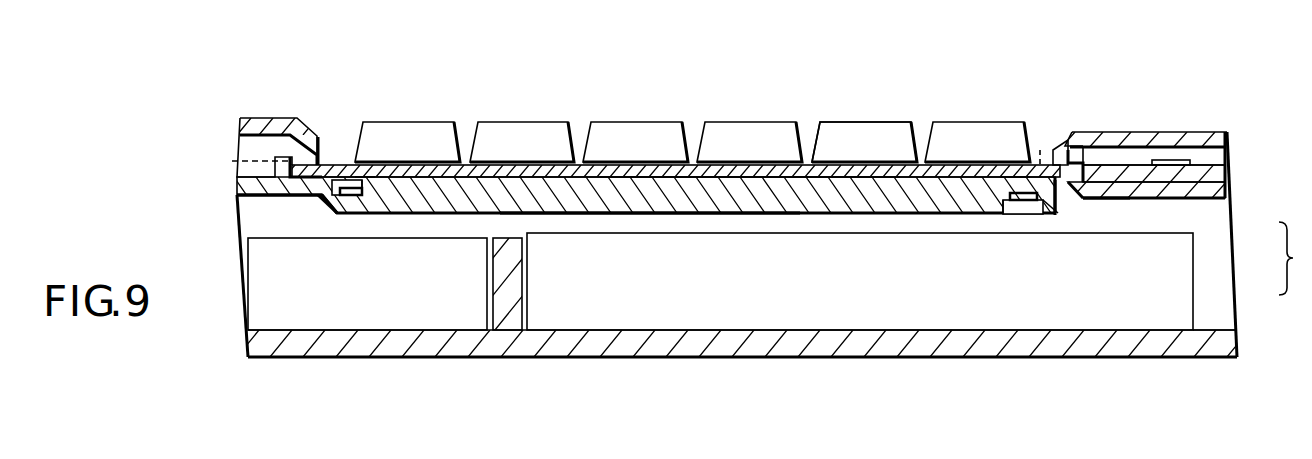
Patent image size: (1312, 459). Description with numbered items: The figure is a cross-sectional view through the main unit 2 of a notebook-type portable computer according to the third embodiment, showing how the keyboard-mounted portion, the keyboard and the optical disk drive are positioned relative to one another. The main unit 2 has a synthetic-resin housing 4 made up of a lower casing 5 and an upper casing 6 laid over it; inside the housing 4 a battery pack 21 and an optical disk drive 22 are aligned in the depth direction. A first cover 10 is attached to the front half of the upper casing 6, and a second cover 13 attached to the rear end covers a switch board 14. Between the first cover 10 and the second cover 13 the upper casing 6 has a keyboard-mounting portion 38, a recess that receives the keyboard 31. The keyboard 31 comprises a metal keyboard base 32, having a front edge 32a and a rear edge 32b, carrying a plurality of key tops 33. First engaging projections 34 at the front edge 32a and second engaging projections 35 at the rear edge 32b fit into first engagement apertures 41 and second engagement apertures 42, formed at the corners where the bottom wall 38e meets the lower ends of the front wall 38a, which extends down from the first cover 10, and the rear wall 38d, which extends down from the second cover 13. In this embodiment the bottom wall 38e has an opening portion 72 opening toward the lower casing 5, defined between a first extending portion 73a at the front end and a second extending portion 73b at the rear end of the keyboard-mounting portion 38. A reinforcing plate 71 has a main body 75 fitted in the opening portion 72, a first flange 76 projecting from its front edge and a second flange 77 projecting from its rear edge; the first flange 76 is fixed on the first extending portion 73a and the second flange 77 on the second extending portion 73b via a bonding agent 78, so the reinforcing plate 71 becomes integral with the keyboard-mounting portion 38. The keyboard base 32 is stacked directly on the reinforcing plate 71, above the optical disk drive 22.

The main unit 2 is at (1065, 366).
The housing 4 is at (1294, 258).
The lower casing 5 is at (1200, 337).
The upper casing 6 is at (1205, 200).
The first cover 10 is at (256, 118).
The second cover 13 is at (1183, 132).
The switch board 14 is at (1215, 176).
The battery pack 21 is at (440, 311).
The optical disk drive 22 is at (895, 331).
The keyboard 31 is at (870, 118).
The keyboard base 32 is at (846, 182).
The front edge 32a is at (336, 178).
The rear edge 32b is at (1028, 176).
The key tops 33 is at (622, 126).
The first engaging projections 34 is at (295, 196).
The second engaging projections 35 is at (1084, 196).
The keyboard-mounting portion 38 is at (690, 165).
The front wall 38a is at (320, 150).
The rear wall 38d is at (1068, 142).
The bottom wall 38e is at (1030, 206).
The first engagement apertures 41 is at (240, 161).
The second engagement apertures 42 is at (1040, 162).
The reinforcing plate 71 is at (774, 190).
The opening portion 72 is at (372, 191).
The first extending portion 73a is at (347, 204).
The second extending portion 73b is at (1008, 204).
The main body 75 is at (624, 203).
The first flange 76 is at (366, 176).
The second flange 77 is at (1012, 182).
The bonding agent 78 is at (318, 201).